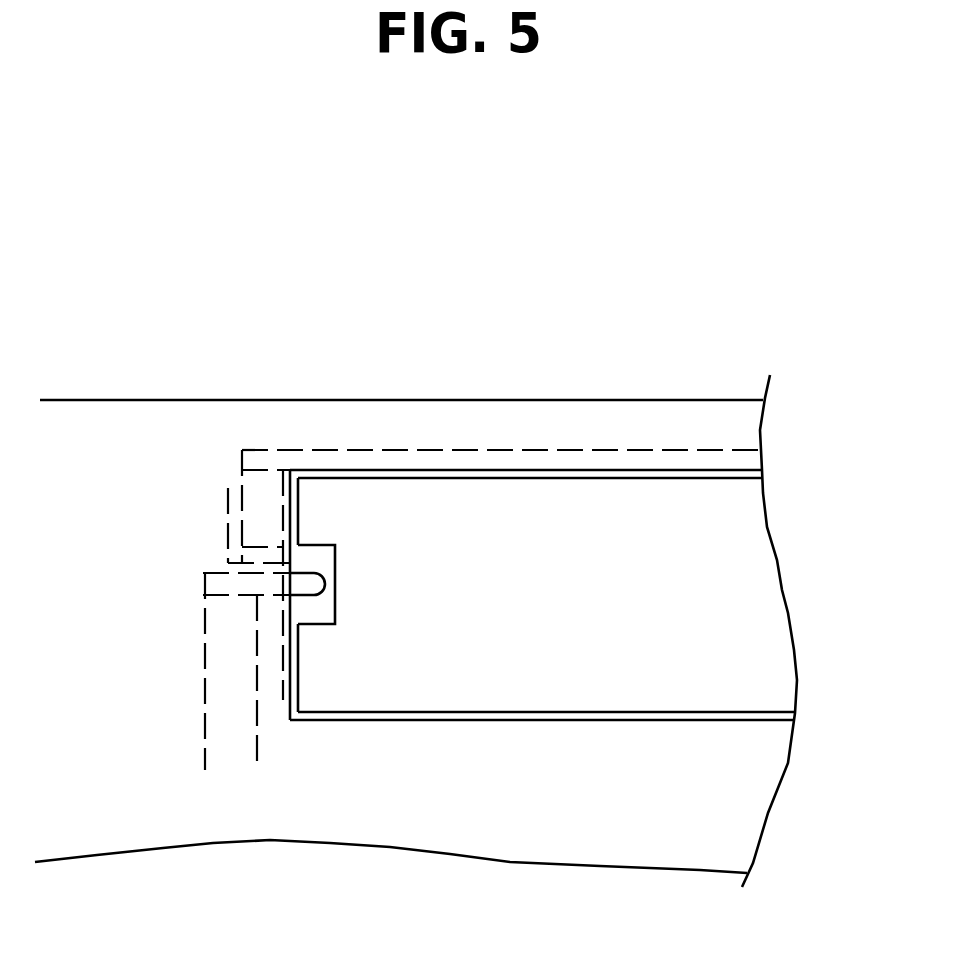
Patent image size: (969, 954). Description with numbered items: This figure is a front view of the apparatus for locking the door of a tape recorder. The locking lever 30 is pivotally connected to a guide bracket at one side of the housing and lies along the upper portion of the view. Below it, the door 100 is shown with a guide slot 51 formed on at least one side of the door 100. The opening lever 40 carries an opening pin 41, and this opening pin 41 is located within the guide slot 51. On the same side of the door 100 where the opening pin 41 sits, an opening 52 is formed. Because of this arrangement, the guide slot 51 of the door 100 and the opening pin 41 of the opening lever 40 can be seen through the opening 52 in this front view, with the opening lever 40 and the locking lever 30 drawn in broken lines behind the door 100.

The locking lever 30 is at (230, 507).
The opening pin 41 is at (250, 587).
The opening lever 40 is at (213, 645).
The door 100 is at (750, 583).
The guide slot 51 is at (308, 608).
The opening 52 is at (337, 605).